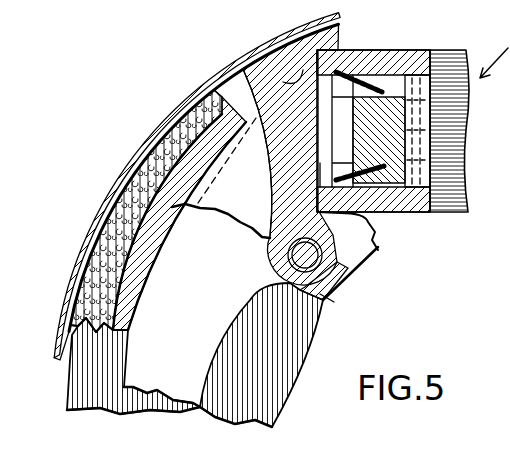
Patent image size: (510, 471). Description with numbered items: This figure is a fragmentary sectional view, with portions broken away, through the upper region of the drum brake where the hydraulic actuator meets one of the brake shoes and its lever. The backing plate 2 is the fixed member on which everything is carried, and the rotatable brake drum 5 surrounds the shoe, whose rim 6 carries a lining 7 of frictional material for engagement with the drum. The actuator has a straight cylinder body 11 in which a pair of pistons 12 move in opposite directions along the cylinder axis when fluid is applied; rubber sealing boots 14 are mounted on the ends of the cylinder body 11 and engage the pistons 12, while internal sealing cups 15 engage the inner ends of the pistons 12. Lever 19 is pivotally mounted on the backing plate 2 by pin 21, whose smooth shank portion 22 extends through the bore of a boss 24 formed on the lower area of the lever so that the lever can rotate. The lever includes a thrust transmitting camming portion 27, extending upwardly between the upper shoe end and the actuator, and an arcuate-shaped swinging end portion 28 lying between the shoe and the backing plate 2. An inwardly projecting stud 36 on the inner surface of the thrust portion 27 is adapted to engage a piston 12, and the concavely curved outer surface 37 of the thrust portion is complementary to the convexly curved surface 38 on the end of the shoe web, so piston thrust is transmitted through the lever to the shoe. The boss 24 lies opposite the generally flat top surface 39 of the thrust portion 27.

The backing plate 2 is at (258, 382).
The brake drum 5 is at (127, 167).
The rim 6 is at (113, 328).
The lining 7 is at (100, 231).
The cylinder body 11 is at (452, 168).
The pistons 12 is at (390, 108).
The rubber sealing boots 14 is at (376, 76).
The internal sealing cups 15 is at (425, 120).
The lever 19 is at (171, 341).
The pin 21 is at (318, 262).
The smooth shank portion 22 is at (292, 256).
The boss 24 is at (322, 290).
The thrust transmitting camming portion 27 is at (282, 92).
The arcuate-shaped swinging end portion 28 is at (147, 377).
The stud 36 is at (322, 208).
The outer surface 37 is at (230, 105).
The convexly curved surface 38 is at (268, 191).
The top surface 39 is at (300, 75).